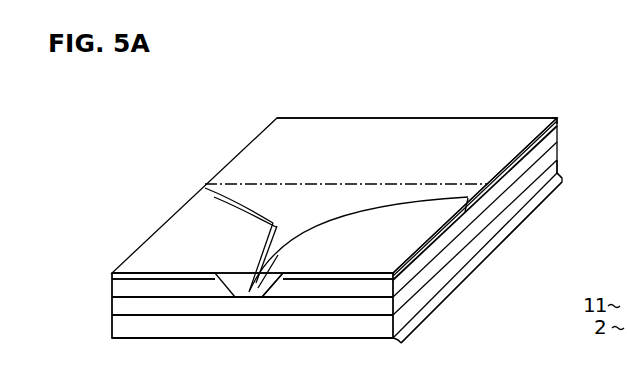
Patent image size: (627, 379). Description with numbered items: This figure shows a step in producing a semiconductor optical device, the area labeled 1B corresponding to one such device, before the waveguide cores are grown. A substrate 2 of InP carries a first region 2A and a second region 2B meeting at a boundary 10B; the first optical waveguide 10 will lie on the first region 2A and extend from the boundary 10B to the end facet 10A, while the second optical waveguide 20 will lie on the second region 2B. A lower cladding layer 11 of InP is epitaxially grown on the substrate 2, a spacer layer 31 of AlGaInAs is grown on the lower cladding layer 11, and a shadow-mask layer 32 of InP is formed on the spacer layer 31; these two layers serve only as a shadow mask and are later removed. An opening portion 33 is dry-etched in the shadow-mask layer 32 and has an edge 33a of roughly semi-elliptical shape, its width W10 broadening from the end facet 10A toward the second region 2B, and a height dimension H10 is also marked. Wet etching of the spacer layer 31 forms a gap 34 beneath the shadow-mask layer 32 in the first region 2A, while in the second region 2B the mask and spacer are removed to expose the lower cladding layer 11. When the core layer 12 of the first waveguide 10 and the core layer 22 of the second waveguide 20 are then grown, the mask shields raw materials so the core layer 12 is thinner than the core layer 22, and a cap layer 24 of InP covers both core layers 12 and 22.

The optical device 1B is at (455, 100).
The substrate 2 is at (130, 330).
The first region 2A is at (448, 297).
The second region 2B is at (534, 208).
The first semiconductor optical waveguide 10 is at (160, 190).
The end facet 10A is at (346, 327).
The boundary 10B is at (490, 200).
The lower cladding layer 11 is at (163, 307).
The core layer 12 is at (248, 300).
The second semiconductor optical waveguide 20 is at (238, 118).
The core layer 22 is at (561, 124).
The cap layer 24 is at (549, 116).
The spacer layer 31 is at (143, 292).
The shadow-mask layer 32 is at (123, 272).
The opening portion 33 is at (203, 187).
The edge 33a is at (262, 198).
The gap 34 is at (284, 284).
The width W10 is at (322, 223).
The groove depth H10 is at (112, 298).